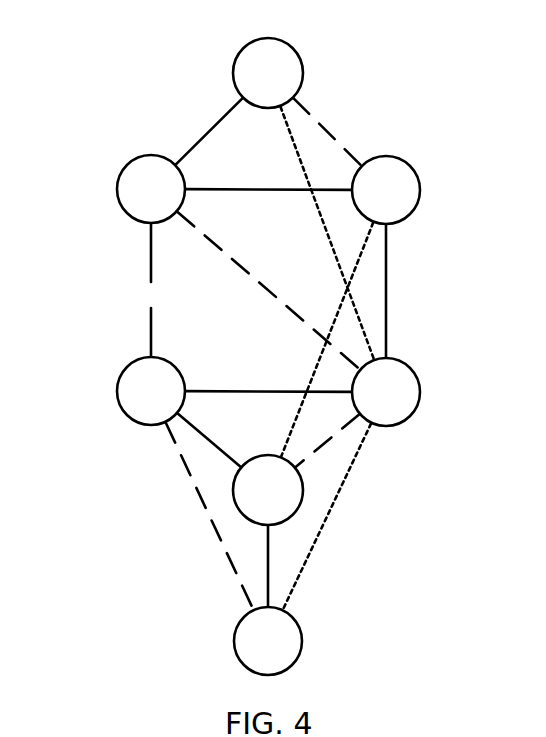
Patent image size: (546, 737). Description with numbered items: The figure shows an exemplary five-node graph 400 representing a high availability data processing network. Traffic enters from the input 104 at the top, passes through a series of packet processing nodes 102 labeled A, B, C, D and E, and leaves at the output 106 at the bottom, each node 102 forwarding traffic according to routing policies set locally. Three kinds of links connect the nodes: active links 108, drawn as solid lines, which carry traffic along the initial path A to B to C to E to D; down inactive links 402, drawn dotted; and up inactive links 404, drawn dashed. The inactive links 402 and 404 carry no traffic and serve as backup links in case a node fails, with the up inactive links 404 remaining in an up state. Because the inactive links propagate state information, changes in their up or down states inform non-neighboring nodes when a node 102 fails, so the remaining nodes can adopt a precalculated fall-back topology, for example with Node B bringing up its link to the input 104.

The five-node graph 400 is at (155, 68).
The input 104 is at (300, 58).
The packet processing node 102 is at (418, 173).
The active link 108 is at (386, 297).
The up inactive link 404 is at (138, 287).
The down inactive link 402 is at (347, 478).
The output 106 is at (308, 630).